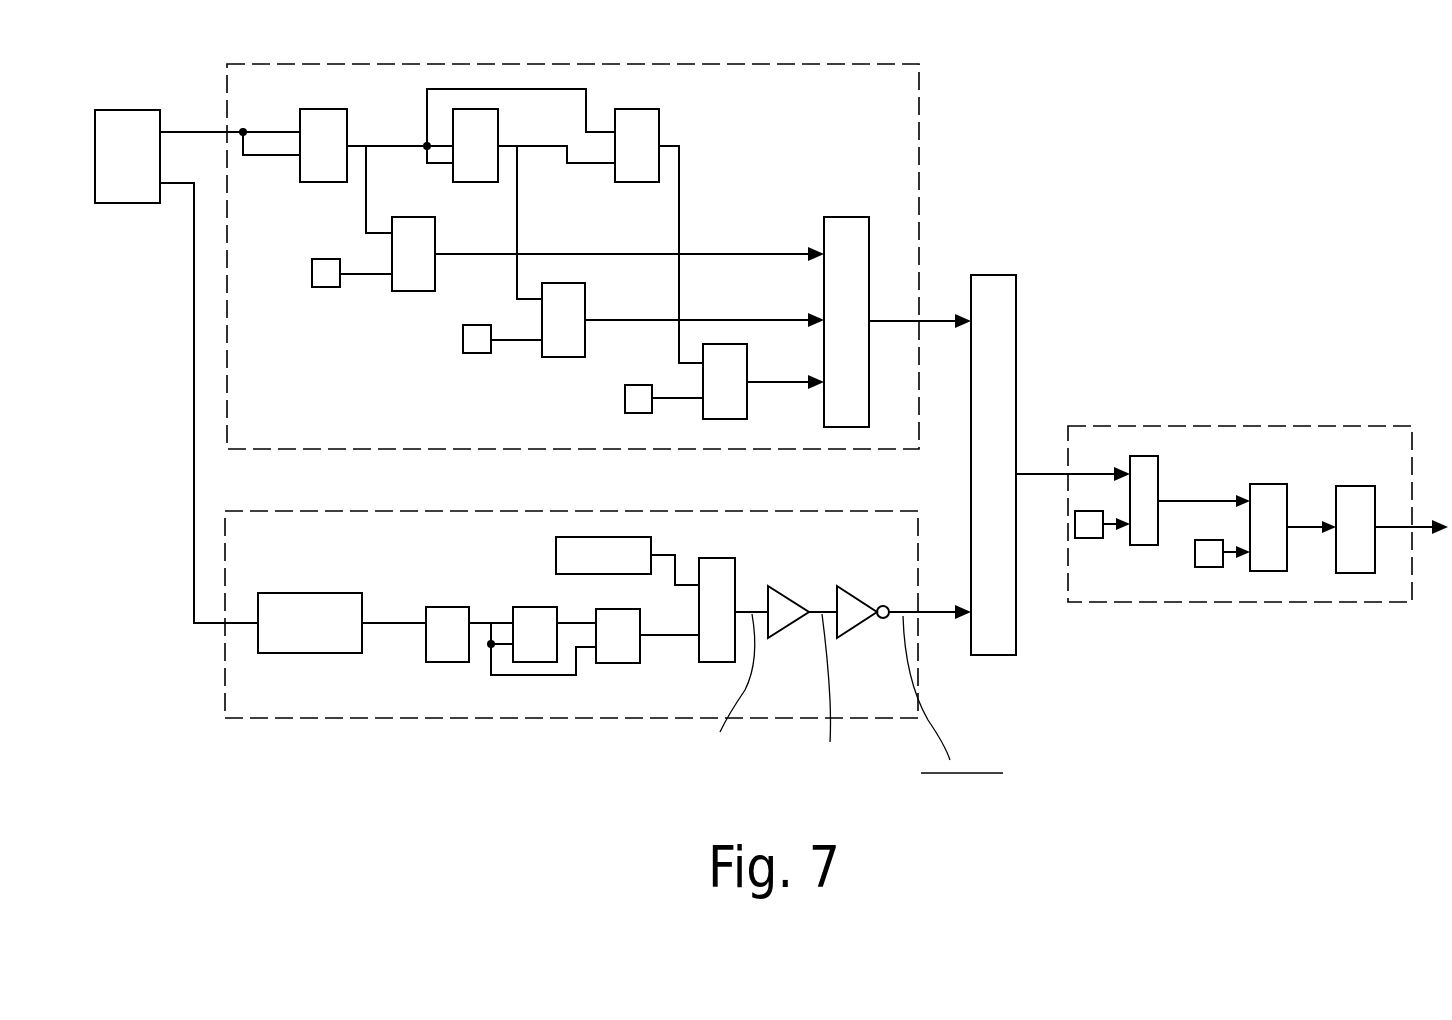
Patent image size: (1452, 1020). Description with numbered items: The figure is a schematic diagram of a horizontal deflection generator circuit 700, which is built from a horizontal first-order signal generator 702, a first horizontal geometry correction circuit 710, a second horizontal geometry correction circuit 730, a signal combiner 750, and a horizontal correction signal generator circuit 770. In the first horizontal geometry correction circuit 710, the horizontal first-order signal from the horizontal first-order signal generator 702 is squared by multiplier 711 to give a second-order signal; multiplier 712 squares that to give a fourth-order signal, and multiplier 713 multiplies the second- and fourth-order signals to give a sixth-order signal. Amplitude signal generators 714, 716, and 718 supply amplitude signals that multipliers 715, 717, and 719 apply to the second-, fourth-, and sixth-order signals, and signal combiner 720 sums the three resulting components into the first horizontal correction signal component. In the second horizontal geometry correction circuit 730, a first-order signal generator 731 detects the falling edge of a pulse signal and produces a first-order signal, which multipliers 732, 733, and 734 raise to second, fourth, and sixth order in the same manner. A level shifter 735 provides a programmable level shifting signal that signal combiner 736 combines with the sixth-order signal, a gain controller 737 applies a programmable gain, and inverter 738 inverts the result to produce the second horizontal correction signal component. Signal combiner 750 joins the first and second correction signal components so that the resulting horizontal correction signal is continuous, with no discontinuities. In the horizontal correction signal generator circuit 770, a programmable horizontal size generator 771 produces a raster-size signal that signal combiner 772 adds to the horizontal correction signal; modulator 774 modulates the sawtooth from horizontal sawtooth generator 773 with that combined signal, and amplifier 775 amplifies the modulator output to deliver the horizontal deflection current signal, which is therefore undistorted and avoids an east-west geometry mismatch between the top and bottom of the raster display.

The horizontal deflection generator circuit 700 is at (1047, 130).
The horizontal first-order signal generator 702 is at (147, 167).
The first horizontal geometry correction circuit 710 is at (848, 64).
The multiplier 711 is at (320, 183).
The multiplier 712 is at (478, 183).
The multiplier 713 is at (638, 183).
The amplitude signal generator 714 is at (325, 288).
The multiplier 715 is at (415, 292).
The amplitude signal generator 716 is at (478, 354).
The multiplier 717 is at (565, 358).
The amplitude signal generator 718 is at (638, 414).
The multiplier 719 is at (727, 420).
The signal combiner 720 is at (845, 217).
The second horizontal geometry correction circuit 730 is at (847, 512).
The first-order signal generator 731 is at (329, 644).
The multiplier 732 is at (448, 663).
The multiplier 733 is at (535, 664).
The multiplier 734 is at (618, 664).
The level shifter 735 is at (623, 569).
The signal combiner 736 is at (718, 663).
The gain controller 737 is at (773, 638).
The inverter 738 is at (841, 638).
The signal combiner 750 is at (993, 275).
The horizontal correction signal generator circuit 770 is at (1252, 426).
The horizontal size generator 771 is at (1087, 538).
The signal combiner 772 is at (1146, 456).
The horizontal sawtooth generator 773 is at (1207, 568).
The modulator 774 is at (1270, 484).
The amplifier 775 is at (1355, 486).